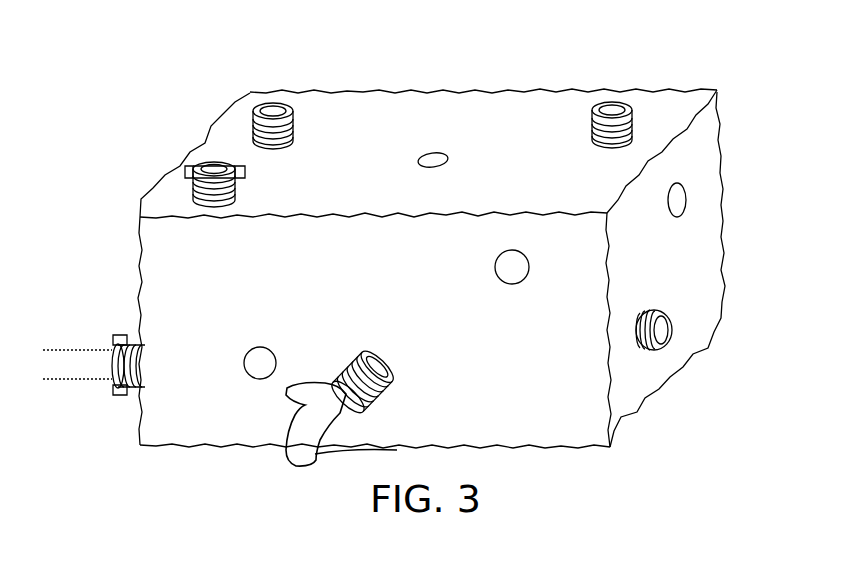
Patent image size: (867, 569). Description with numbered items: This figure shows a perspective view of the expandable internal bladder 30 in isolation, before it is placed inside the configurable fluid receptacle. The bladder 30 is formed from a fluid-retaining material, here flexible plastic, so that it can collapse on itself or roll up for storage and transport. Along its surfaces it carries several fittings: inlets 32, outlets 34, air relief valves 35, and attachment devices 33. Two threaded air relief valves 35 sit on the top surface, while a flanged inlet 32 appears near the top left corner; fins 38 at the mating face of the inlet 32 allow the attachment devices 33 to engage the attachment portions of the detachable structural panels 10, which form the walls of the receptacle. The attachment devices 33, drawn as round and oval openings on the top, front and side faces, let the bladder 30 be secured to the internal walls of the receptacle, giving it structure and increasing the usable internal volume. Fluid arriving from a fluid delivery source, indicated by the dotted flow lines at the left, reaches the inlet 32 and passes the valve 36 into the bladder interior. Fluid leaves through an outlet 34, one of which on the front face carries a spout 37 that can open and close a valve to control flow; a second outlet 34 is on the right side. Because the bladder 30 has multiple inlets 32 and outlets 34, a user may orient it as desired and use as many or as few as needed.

The expandable internal bladder 30 is at (662, 62).
The inlets 32 is at (212, 167).
The attachment devices 33 is at (445, 162).
The outlets 34 is at (657, 309).
The air relief valves 35 is at (293, 132).
The valve 36 is at (130, 333).
The spout 37 is at (360, 407).
The fins 38 is at (237, 177).
The detachable structural panels 10 is at (82, 342).